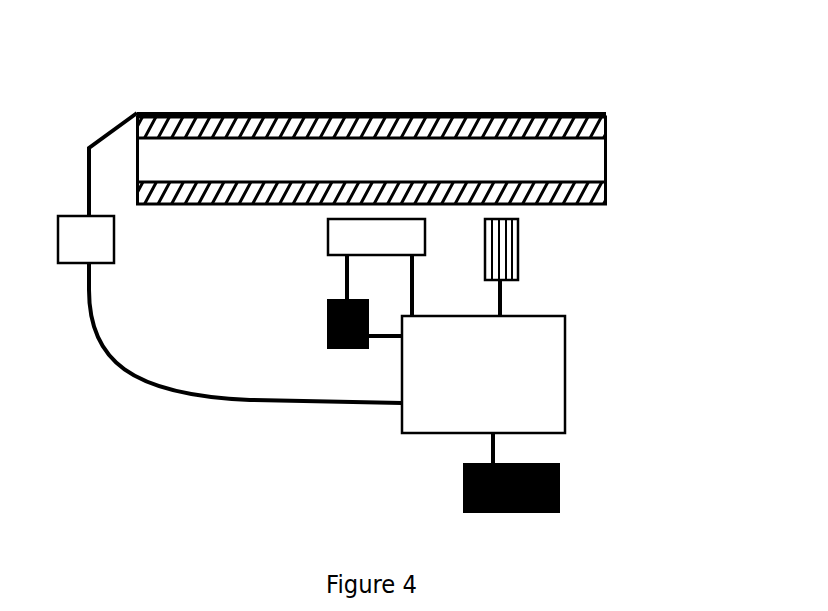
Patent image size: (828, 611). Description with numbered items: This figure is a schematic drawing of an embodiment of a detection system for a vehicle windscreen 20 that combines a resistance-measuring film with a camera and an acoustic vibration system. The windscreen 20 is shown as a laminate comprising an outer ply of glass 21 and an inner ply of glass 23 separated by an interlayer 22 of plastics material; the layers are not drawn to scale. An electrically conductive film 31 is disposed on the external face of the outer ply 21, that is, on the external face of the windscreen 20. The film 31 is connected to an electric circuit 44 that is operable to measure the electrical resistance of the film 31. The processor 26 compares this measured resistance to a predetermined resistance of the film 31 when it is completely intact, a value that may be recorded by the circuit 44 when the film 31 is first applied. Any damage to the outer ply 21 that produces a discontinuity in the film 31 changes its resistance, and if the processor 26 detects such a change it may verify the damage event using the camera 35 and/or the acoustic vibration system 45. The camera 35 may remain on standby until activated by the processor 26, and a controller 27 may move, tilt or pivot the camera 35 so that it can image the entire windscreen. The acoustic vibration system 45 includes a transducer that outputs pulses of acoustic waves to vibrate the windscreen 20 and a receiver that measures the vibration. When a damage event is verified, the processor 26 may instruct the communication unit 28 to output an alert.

The vehicle windscreen 20 is at (155, 63).
The outer ply of glass 21 is at (600, 130).
The interlayer 22 is at (590, 163).
The inner ply of glass 23 is at (196, 202).
The processor 26 is at (565, 369).
The controller 27 is at (327, 327).
The communication unit 28 is at (560, 480).
The electrically conductive film 31 is at (344, 111).
The camera 35 is at (333, 243).
The electric circuit 44 is at (75, 265).
The acoustic vibration system 45 is at (518, 253).